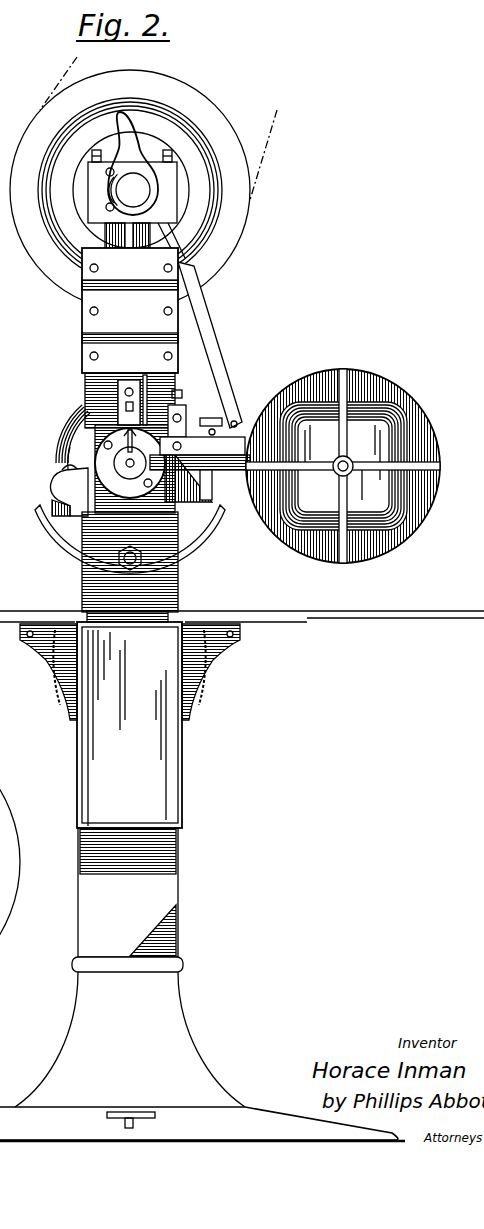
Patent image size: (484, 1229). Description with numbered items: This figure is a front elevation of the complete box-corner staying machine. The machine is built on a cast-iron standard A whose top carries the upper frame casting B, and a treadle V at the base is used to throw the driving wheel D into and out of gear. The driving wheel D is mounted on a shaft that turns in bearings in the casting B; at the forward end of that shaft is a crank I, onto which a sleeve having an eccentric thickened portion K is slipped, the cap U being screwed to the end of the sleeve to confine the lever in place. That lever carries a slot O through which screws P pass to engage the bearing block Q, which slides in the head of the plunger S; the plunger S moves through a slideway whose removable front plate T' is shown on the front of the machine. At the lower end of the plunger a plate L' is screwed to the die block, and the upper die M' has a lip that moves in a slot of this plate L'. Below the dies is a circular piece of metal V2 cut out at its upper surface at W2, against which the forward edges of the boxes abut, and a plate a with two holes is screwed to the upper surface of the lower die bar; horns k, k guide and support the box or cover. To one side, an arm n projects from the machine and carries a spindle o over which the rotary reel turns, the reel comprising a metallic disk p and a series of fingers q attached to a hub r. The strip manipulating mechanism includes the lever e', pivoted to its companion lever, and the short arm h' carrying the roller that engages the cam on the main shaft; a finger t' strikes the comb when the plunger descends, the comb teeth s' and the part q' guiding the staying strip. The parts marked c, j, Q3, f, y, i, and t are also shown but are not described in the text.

The driving wheel D is at (143, 183).
The thickened portion K is at (178, 200).
The crank I is at (132, 167).
The cap U is at (133, 190).
The slot O is at (112, 205).
The screws P is at (104, 172).
The short arm h' is at (149, 242).
The plunger S is at (130, 310).
The front plate T' is at (130, 322).
The plate L' is at (131, 386).
The bearing block Q is at (126, 408).
The bearing c is at (135, 469).
The circular piece of metal V2 is at (130, 463).
The plate a is at (121, 458).
The wedge j is at (188, 472).
The upper die M' is at (68, 431).
The cut-out W2 is at (78, 440).
The lug Q3 is at (55, 471).
The upper part of the frame B is at (69, 492).
The connecting arm f is at (210, 345).
The slide post y is at (186, 410).
The finger t' is at (182, 383).
The lever e' is at (211, 418).
The arm n is at (200, 478).
The horns k is at (129, 539).
The nut i is at (130, 566).
The standard A is at (242, 809).
The treadle V is at (129, 1110).
The metallic disk p is at (432, 441).
The inner frame t is at (343, 466).
The fingers q is at (352, 466).
The spindle o is at (343, 458).
The hub r is at (338, 461).
The part q' is at (358, 381).
The teeth s' is at (317, 540).